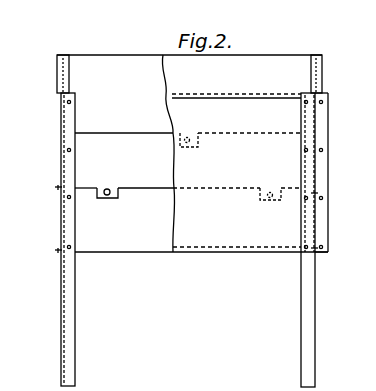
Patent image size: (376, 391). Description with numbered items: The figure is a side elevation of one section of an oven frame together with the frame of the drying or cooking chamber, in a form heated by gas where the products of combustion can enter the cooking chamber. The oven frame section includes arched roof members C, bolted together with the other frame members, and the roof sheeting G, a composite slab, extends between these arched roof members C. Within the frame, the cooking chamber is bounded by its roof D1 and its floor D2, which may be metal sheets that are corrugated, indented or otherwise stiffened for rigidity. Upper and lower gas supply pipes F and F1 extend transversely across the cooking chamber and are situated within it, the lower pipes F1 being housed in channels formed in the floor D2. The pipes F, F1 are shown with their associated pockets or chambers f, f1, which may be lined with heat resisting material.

The arched roof member C is at (57, 68).
The roof sheeting G is at (189, 94).
The roof of the cooking chamber D1 is at (101, 131).
The floor of the cooking chamber D2 is at (147, 187).
The upper gas supply pipe F is at (191, 136).
The pocket or chamber f is at (196, 144).
The lower gas supply pipe F1 is at (112, 197).
The pocket or chamber f1 is at (100, 196).